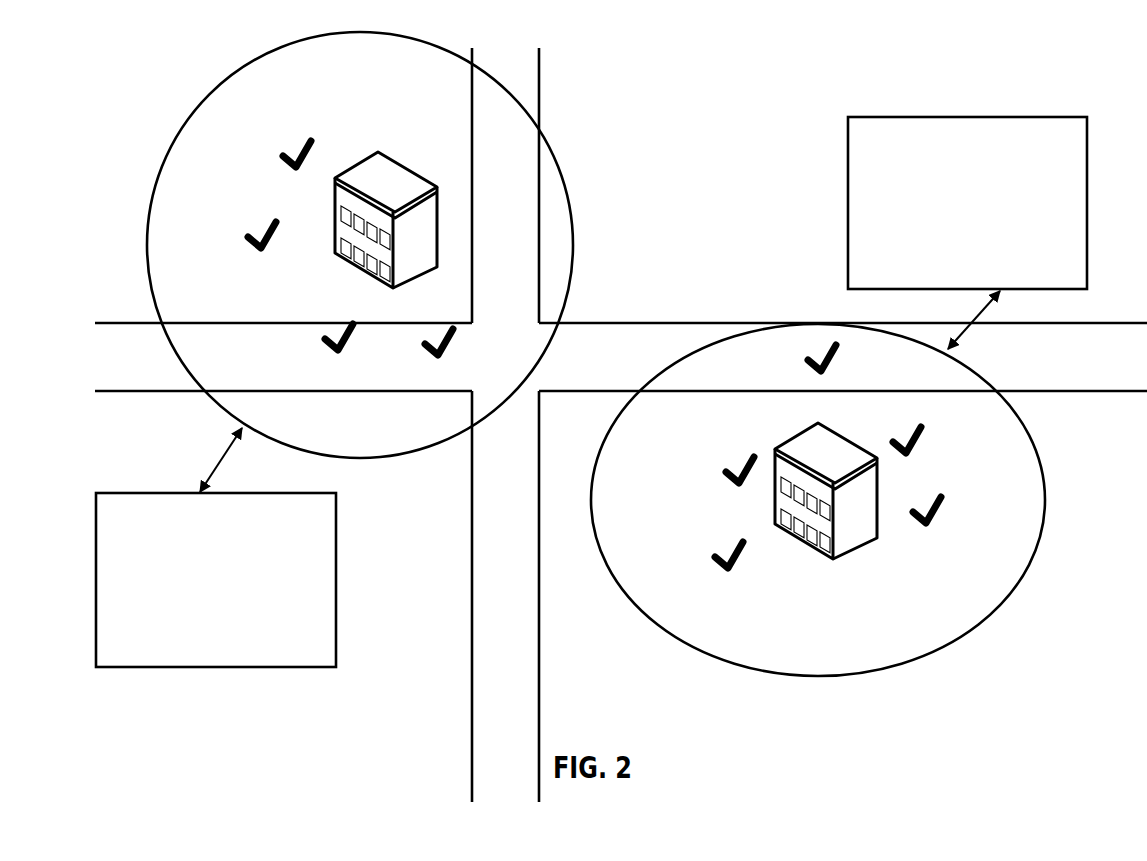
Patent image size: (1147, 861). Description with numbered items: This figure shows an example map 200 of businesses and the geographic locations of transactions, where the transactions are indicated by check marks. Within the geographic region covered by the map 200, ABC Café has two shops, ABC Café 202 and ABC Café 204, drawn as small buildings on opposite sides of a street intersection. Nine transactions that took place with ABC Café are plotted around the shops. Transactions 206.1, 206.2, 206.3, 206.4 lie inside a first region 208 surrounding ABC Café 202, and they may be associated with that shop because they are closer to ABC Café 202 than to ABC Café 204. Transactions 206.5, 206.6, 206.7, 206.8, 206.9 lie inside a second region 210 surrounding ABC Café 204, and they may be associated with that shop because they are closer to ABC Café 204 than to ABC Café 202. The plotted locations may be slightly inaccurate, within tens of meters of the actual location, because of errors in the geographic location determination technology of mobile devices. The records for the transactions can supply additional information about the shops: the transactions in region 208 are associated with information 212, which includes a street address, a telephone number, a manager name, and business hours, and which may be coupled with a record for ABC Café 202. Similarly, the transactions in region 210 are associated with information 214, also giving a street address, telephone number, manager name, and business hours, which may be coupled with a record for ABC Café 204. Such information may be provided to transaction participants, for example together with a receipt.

The map 200 is at (608, 42).
The ABC Café 202 is at (386, 189).
The ABC Café 204 is at (826, 518).
The transaction 206.1 is at (286, 155).
The transaction 206.2 is at (252, 237).
The transaction 206.3 is at (323, 340).
The transaction 206.4 is at (445, 344).
The transaction 206.5 is at (727, 473).
The transaction 206.6 is at (712, 557).
The transaction 206.7 is at (834, 357).
The transaction 206.8 is at (920, 440).
The transaction 206.9 is at (942, 509).
The region 208 is at (575, 237).
The region 210 is at (1045, 506).
The information 212 is at (336, 581).
The information 214 is at (952, 117).